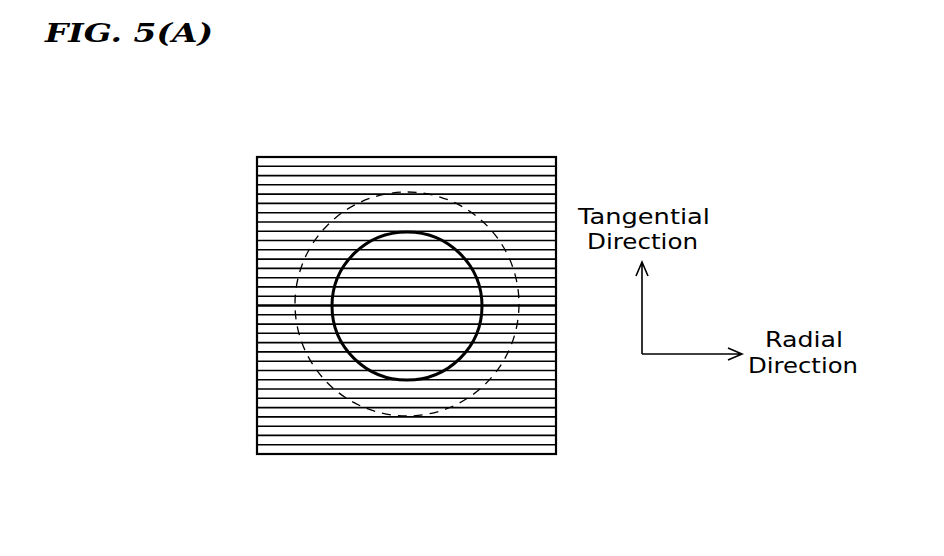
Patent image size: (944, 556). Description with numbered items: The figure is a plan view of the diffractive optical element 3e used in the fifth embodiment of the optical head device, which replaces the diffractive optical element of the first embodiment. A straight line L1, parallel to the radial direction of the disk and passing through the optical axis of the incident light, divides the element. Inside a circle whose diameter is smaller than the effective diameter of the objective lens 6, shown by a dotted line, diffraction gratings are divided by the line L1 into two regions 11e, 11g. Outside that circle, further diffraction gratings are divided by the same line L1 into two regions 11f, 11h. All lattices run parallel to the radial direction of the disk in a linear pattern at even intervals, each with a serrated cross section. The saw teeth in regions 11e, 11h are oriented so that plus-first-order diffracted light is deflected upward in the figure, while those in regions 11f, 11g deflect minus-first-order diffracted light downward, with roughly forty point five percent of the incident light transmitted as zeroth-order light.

The diffractive optical element 3e is at (257, 403).
The region 11f is at (487, 182).
The region 11h is at (483, 430).
The objective lens 6 is at (258, 308).
The straight line L1 is at (537, 307).
The region 11e is at (398, 246).
The region 11g is at (398, 355).